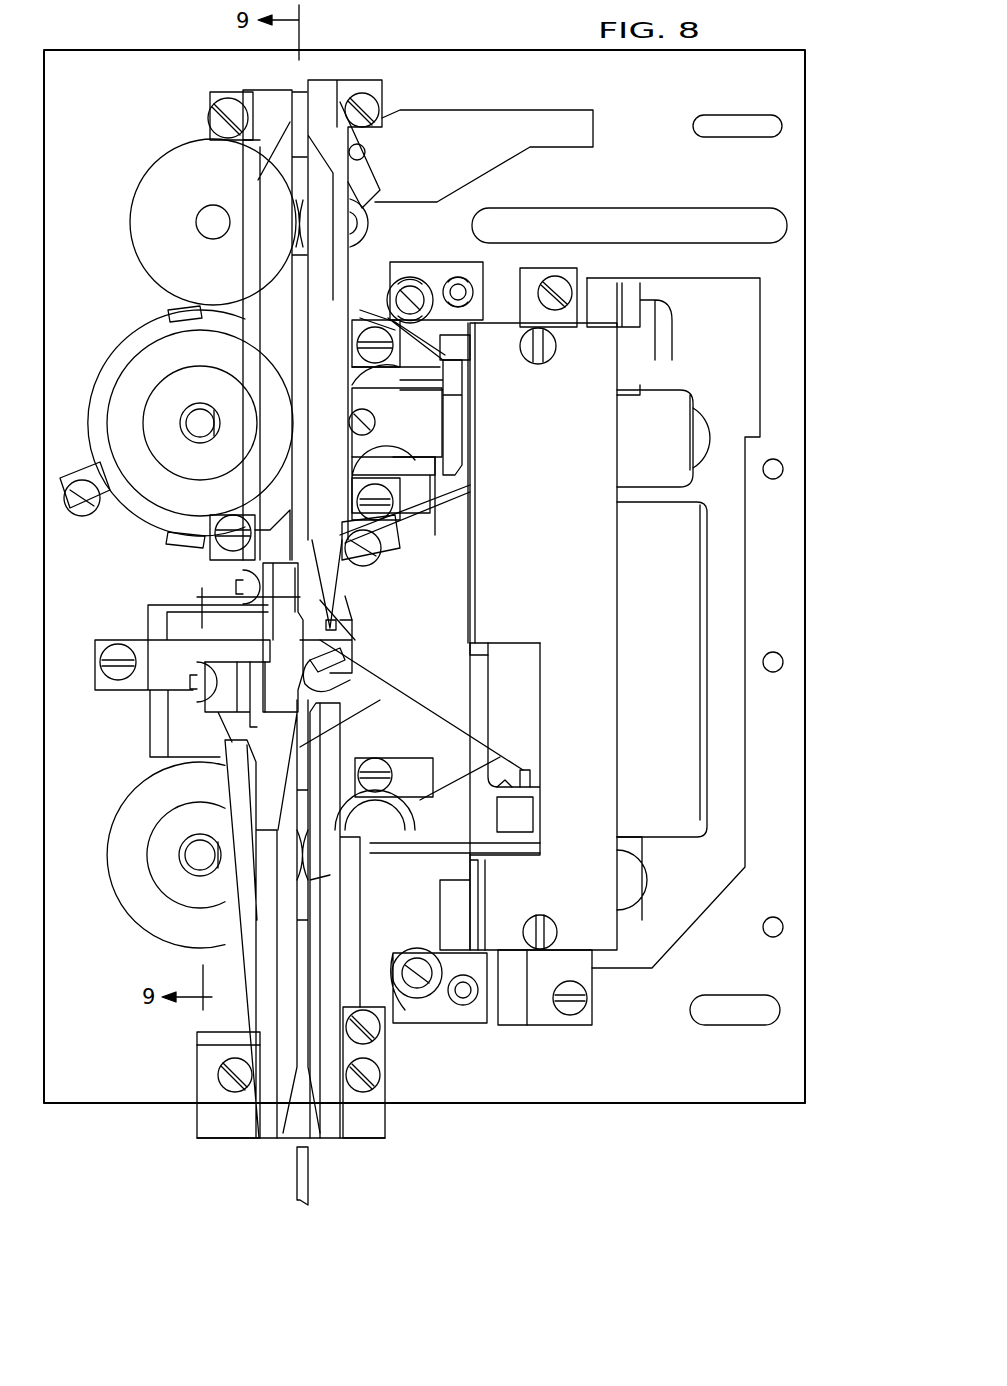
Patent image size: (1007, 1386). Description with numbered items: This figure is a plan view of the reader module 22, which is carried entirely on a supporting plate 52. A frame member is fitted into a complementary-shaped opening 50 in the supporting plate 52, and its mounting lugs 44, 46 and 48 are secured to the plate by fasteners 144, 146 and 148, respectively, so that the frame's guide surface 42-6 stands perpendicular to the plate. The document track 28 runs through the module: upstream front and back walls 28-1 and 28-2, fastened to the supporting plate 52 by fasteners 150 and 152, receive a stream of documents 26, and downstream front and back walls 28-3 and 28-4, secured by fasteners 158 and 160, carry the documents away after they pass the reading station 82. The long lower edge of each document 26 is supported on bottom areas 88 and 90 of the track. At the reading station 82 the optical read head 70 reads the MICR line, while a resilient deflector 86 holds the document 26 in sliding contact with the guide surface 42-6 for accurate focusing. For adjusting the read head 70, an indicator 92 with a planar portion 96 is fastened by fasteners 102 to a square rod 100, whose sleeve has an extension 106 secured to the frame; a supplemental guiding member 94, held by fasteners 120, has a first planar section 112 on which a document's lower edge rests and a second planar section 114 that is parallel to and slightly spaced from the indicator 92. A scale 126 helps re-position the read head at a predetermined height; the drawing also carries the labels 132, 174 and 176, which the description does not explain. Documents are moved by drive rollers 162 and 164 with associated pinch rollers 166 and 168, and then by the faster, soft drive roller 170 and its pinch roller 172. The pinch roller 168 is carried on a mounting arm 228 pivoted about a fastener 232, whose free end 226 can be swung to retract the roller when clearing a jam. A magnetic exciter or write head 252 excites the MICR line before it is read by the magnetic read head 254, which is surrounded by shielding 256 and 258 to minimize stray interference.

The reader module 22 is at (132, 46).
The document 26 is at (310, 1178).
The document track 28 is at (261, 1138).
The front wall 28-1 is at (330, 1128).
The back wall 28-2 is at (270, 1032).
The front wall 28-3 is at (326, 98).
The back wall 28-4 is at (270, 100).
The guide surface 42-6 is at (350, 647).
The mounting lug 44 is at (540, 1030).
The mounting lug 46 is at (560, 322).
The mounting lug 48 is at (140, 677).
The opening 50 is at (662, 946).
The supporting plate 52 is at (641, 1083).
The read head 70 is at (443, 612).
The reading station 82 is at (337, 626).
The resilient deflector 86 is at (318, 670).
The bottom area 88 is at (360, 712).
The bottom area 90 is at (300, 510).
The indicator 92 is at (497, 702).
The supplemental document-guiding member 94 is at (583, 594).
The planar portion 96 is at (497, 655).
The square rod 100 is at (520, 813).
The fasteners 102 is at (527, 785).
The extension 106 is at (530, 850).
The first planar section 112 is at (606, 541).
The second planar section 114 is at (476, 507).
The fasteners 120 is at (545, 925).
The scale 126 is at (612, 300).
The capacitor 132 is at (668, 450).
The fastener 144 is at (575, 1010).
The fastener 146 is at (560, 288).
The fastener 148 is at (120, 655).
The fasteners 150 is at (380, 770).
The fasteners 152 is at (222, 1076).
The fasteners 158 is at (368, 115).
The fasteners 160 is at (222, 124).
The drive roller 162 is at (142, 795).
The drive roller 164 is at (128, 378).
The pinch roller 166 is at (380, 915).
The pinch roller 168 is at (376, 462).
The drive roller 170 is at (152, 186).
The pinch roller 172 is at (372, 230).
The lower wheel hub 174 is at (202, 852).
The drive wheel hub 176 is at (195, 418).
The free end 226 is at (450, 462).
The mounting arm 228 is at (448, 360).
The fastener 232 is at (412, 300).
The magnetic exciter or write head 252 is at (520, 762).
The magnetic read head 254 is at (448, 398).
The shielding 256 is at (136, 330).
The shielding 258 is at (440, 352).